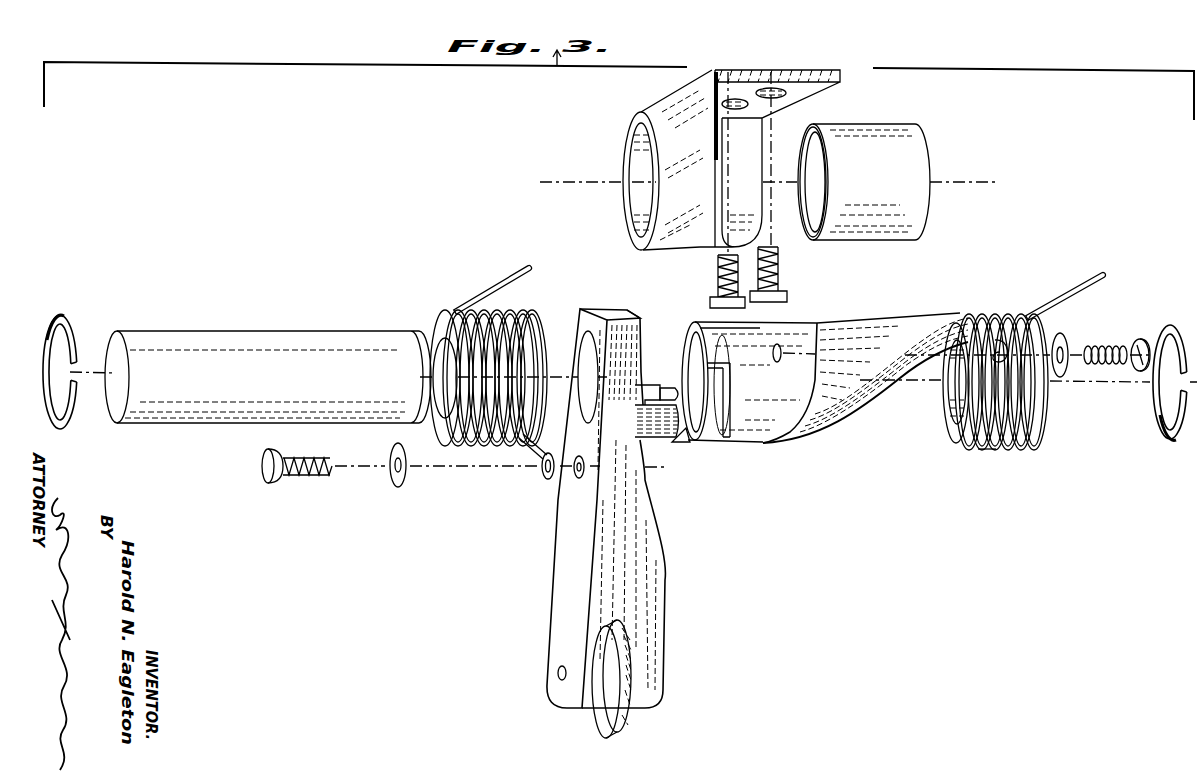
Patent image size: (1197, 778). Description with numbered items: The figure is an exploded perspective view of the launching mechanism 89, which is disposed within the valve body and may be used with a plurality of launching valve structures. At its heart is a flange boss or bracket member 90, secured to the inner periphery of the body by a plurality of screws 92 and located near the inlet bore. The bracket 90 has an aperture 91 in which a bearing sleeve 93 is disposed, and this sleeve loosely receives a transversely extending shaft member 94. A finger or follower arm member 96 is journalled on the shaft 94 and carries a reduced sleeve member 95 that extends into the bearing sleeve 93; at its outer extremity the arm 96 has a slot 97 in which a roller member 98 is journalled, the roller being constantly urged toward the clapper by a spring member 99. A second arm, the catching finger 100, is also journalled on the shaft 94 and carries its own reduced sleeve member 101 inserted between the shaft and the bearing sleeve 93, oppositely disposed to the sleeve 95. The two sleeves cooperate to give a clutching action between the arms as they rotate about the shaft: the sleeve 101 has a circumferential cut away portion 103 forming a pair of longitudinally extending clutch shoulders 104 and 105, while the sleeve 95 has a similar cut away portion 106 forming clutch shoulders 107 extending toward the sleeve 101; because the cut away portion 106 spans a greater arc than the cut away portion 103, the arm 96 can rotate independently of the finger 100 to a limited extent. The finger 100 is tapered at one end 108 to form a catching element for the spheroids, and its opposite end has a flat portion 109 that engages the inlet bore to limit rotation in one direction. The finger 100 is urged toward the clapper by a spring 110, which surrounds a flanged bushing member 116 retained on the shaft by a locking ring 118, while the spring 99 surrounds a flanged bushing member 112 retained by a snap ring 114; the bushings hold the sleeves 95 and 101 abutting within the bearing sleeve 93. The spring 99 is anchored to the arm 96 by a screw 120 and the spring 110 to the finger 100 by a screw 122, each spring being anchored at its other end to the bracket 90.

The launching mechanism 89 is at (396, 313).
The bracket member 90 is at (713, 160).
The aperture 91 is at (623, 160).
The screws 92 is at (712, 298).
The bearing sleeve 93 is at (893, 112).
The shaft member 94 is at (203, 342).
The reduced sleeve member 95 is at (650, 434).
The follower arm member 96 is at (643, 532).
The slot 97 is at (635, 650).
The roller member 98 is at (622, 720).
The spring member 99 is at (527, 313).
The catching finger 100 is at (848, 322).
The reduced sleeve member 101 is at (700, 323).
The circumferential cut away portion 103 is at (728, 444).
The clutch shoulder 104 is at (655, 387).
The clutch shoulder 105 is at (724, 367).
The circumferential cut away portion 106 is at (652, 325).
The clutch shoulder 107 is at (658, 386).
The tapered end 108 is at (943, 320).
The flat portion 109 is at (682, 444).
The spring 110 is at (988, 447).
The flanged bushing member 112 is at (545, 335).
The snap ring 114 is at (73, 322).
The flanged bushing member 116 is at (945, 412).
The locking ring 118 is at (1158, 428).
The screw 120 is at (262, 458).
The screw 122 is at (1143, 340).